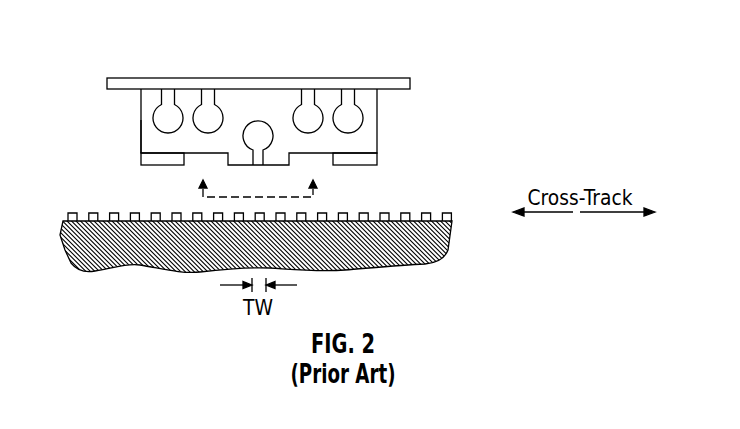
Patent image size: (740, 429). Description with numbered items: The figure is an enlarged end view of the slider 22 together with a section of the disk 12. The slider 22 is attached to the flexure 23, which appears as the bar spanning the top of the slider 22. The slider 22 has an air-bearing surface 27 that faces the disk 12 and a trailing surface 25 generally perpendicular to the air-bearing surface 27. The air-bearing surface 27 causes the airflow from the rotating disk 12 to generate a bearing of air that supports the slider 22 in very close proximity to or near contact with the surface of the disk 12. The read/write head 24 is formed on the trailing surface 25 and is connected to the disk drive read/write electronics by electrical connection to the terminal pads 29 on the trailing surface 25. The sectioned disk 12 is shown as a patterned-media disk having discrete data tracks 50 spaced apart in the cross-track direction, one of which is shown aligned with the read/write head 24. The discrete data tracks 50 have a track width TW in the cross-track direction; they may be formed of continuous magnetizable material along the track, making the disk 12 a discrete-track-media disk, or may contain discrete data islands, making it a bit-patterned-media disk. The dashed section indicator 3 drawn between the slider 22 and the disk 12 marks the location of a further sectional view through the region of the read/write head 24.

The magnetic recording medium 12 is at (438, 246).
The read head 22 is at (378, 142).
The shield 23 is at (400, 79).
The central read sensor 24 is at (263, 124).
The read head body 25 is at (152, 143).
The side pads 27 is at (163, 167).
The read sensors 29 is at (193, 118).
The data tracks 50 is at (89, 213).
The section line 3- 3 is at (258, 176).